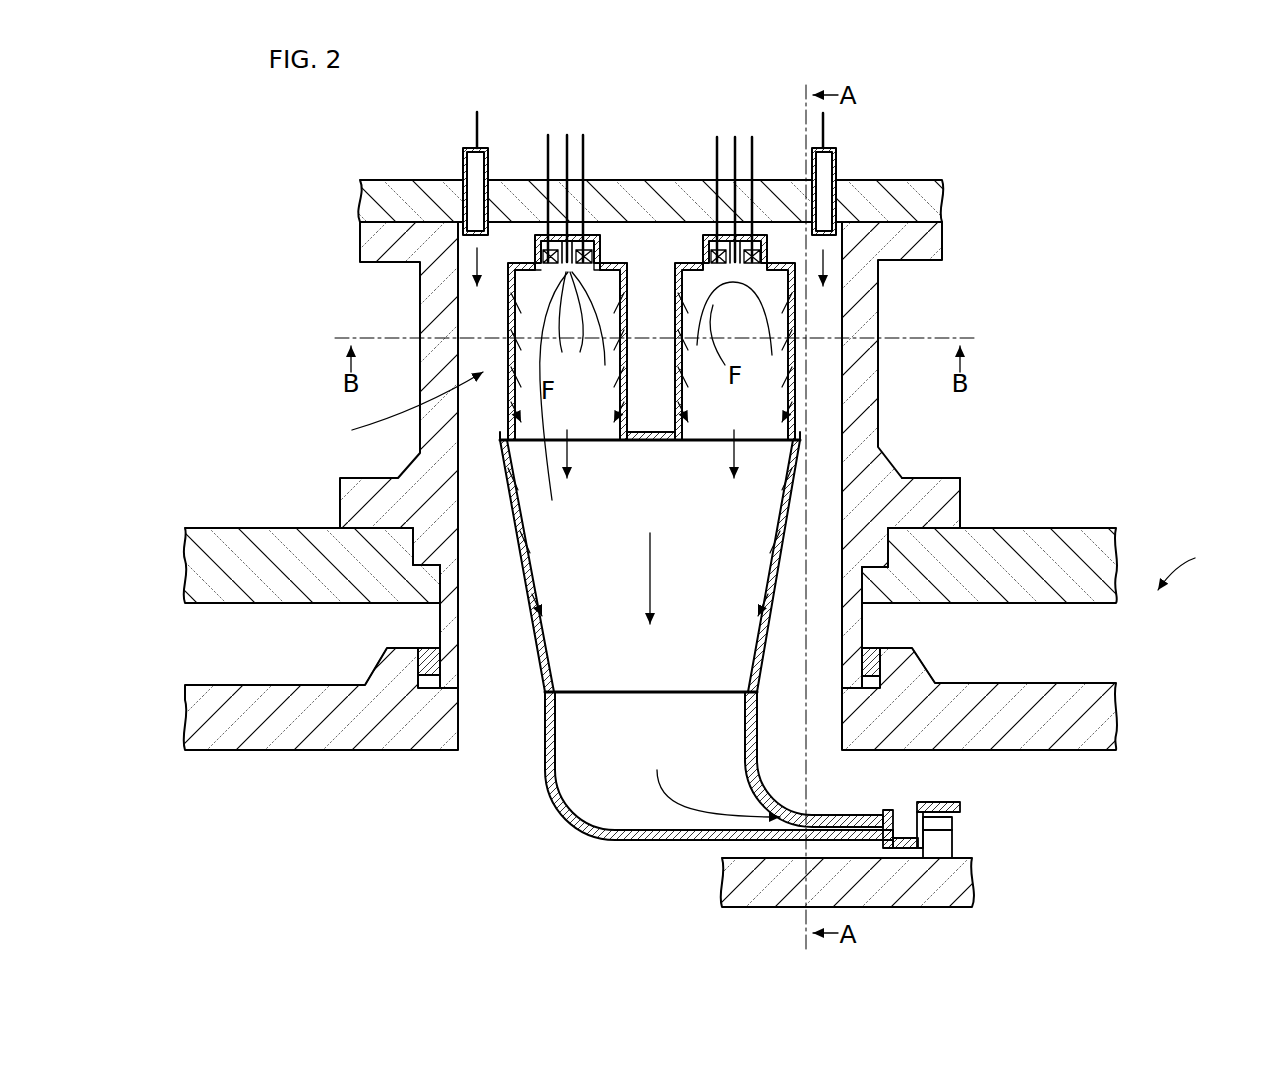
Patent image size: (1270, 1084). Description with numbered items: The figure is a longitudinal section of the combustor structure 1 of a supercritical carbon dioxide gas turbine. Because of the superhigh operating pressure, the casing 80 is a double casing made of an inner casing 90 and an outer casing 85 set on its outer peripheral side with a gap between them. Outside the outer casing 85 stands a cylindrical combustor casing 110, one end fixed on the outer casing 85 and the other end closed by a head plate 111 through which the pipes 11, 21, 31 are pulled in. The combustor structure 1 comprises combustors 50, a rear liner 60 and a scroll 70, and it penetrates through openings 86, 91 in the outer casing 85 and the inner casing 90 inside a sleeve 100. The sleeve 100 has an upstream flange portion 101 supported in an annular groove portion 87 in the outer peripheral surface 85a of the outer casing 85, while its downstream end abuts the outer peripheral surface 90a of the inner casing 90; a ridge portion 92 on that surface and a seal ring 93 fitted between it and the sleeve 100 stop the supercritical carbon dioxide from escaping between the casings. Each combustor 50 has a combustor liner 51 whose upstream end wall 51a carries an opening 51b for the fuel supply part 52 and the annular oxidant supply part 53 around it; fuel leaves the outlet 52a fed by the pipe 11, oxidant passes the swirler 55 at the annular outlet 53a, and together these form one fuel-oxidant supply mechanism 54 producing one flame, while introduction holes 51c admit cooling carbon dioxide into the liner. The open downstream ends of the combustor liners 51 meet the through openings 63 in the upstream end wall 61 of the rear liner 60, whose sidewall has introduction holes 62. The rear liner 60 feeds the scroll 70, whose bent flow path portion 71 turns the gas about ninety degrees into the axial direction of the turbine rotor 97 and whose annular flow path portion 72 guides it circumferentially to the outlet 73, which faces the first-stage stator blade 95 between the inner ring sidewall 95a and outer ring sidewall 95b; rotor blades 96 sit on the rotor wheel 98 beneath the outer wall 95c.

The combustor structure 1 is at (328, 449).
The pipe 11 is at (567, 140).
The pipe 21 is at (583, 140).
The pipe 31 is at (476, 128).
The combustor 50 is at (661, 230).
The combustor liner 51 is at (507, 320).
The upstream end wall 51a is at (607, 262).
The opening 51b is at (604, 268).
The introduction holes 51c is at (610, 376).
The fuel supply part 52 is at (584, 250).
The outlet 52a is at (548, 302).
The oxidant supply part 53 is at (561, 243).
The annular outlet 53a is at (540, 266).
The fuel-oxidant supply mechanism 54 is at (570, 280).
The swirler 55 is at (538, 258).
The rear liner 60 is at (523, 610).
The upstream end wall 61 is at (655, 444).
The introduction holes 62 is at (521, 531).
The through openings 63 is at (664, 440).
The scroll 70 is at (564, 822).
The bent flow path portion 71 is at (548, 735).
The annular flow path portion 72 is at (710, 842).
The outlet 73 is at (878, 816).
The casing 80 is at (1193, 556).
The outer casing 85 is at (1050, 537).
The outer peripheral surface 85a is at (975, 528).
The through opening 86 is at (470, 558).
The annular groove portion 87 is at (878, 578).
The inner casing 90 is at (1050, 690).
The outer peripheral surface 90a is at (985, 684).
The through opening 91 is at (462, 738).
The ridge portion 92 is at (385, 650).
The seal ring 93 is at (425, 656).
The stator blade 95 is at (888, 812).
The inner ring sidewall 95a is at (898, 842).
The outer ring sidewall 95b is at (926, 803).
The outer wall 95c is at (956, 804).
The rotor blade 96 is at (950, 823).
The turbine rotor 97 is at (955, 896).
The rotor wheel 98 is at (950, 846).
The sleeve 100 is at (872, 664).
The flange portion 101 is at (915, 479).
The combustor casing 110 is at (878, 425).
The head plate 111 is at (908, 180).